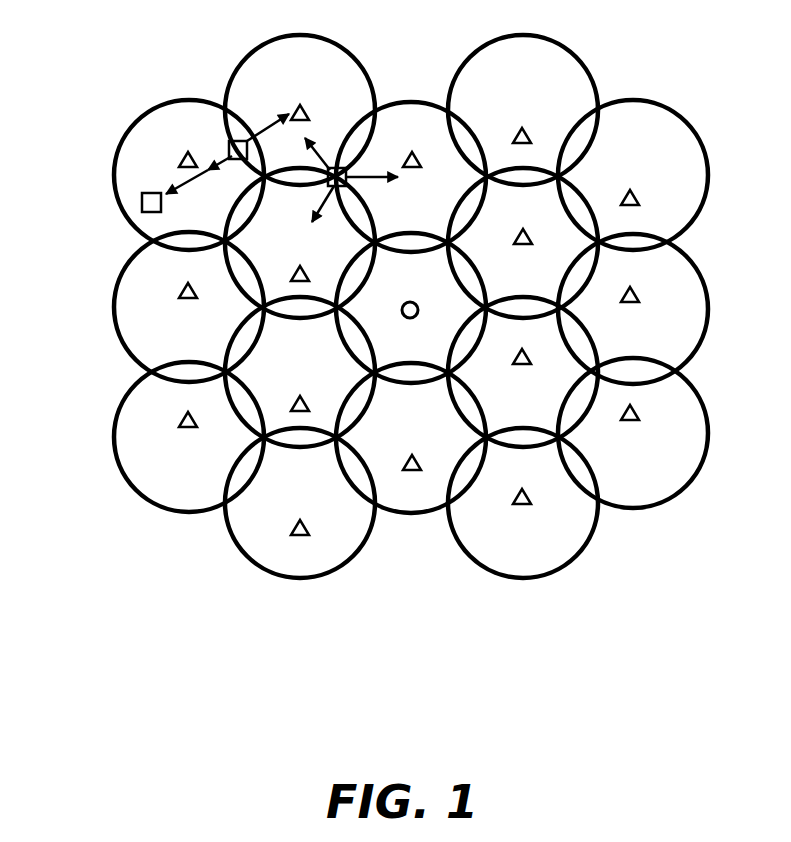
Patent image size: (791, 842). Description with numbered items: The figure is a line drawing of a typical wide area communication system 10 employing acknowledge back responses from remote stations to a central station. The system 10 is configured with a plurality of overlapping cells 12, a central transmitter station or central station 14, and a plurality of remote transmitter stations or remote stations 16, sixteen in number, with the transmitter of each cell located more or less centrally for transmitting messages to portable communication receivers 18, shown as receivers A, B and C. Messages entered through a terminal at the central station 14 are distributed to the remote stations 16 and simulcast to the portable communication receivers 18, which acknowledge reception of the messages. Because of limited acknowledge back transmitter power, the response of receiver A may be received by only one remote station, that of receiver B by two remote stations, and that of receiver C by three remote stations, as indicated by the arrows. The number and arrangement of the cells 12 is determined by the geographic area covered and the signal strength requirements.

The wide area communication system 10 is at (418, 618).
The cell 12 is at (133, 120).
The central station 14 is at (383, 317).
The remote station 16 is at (178, 160).
The portable communication receiver 18 is at (140, 212).